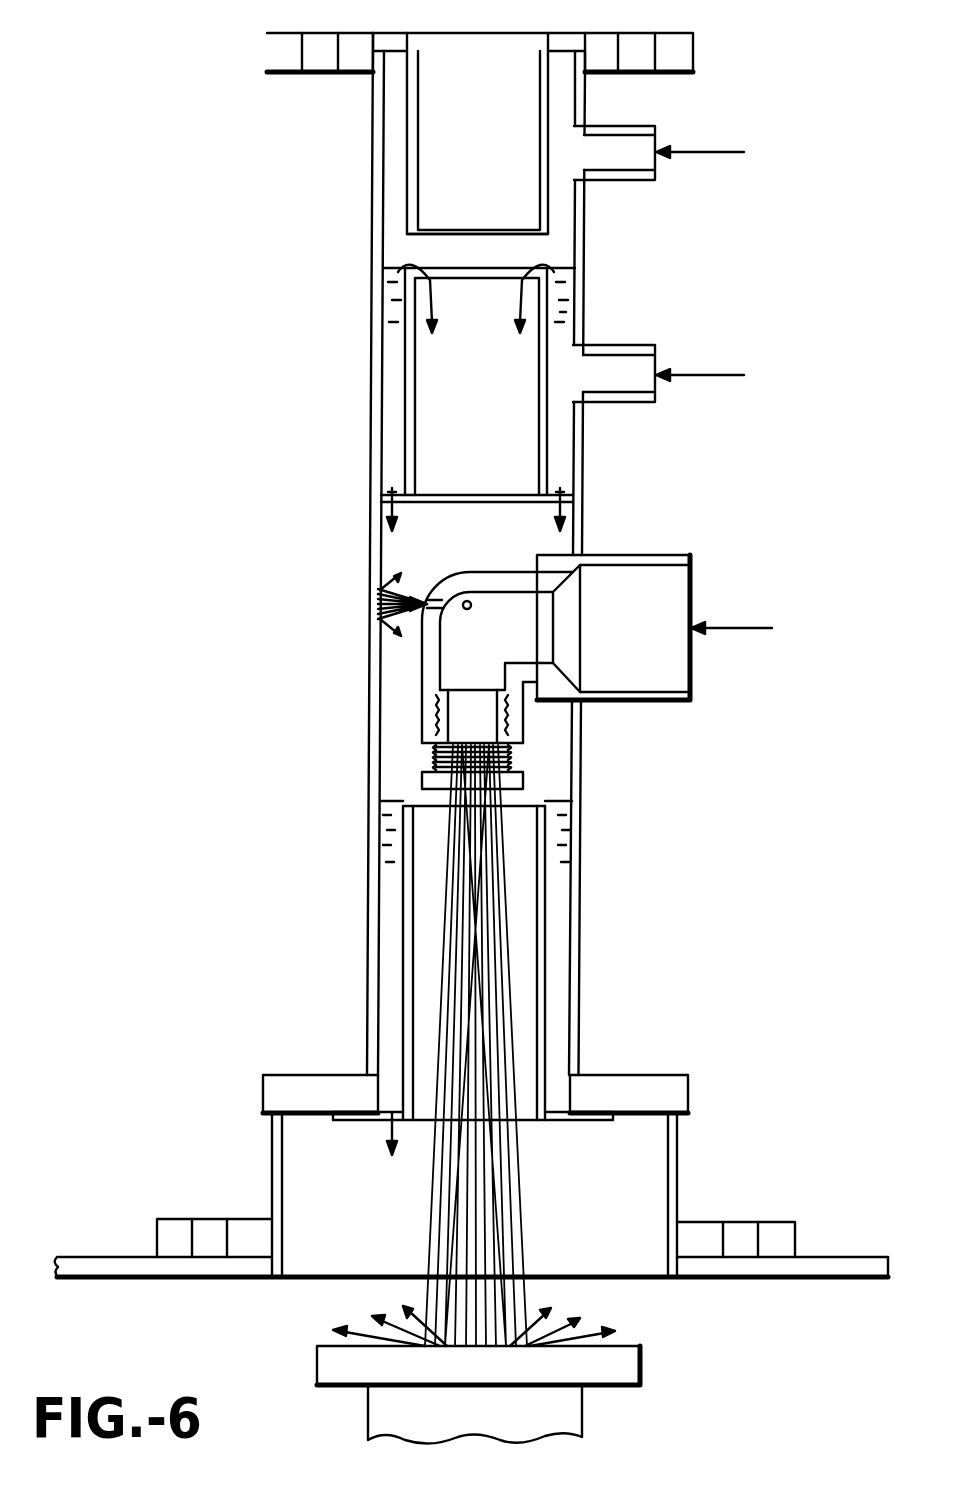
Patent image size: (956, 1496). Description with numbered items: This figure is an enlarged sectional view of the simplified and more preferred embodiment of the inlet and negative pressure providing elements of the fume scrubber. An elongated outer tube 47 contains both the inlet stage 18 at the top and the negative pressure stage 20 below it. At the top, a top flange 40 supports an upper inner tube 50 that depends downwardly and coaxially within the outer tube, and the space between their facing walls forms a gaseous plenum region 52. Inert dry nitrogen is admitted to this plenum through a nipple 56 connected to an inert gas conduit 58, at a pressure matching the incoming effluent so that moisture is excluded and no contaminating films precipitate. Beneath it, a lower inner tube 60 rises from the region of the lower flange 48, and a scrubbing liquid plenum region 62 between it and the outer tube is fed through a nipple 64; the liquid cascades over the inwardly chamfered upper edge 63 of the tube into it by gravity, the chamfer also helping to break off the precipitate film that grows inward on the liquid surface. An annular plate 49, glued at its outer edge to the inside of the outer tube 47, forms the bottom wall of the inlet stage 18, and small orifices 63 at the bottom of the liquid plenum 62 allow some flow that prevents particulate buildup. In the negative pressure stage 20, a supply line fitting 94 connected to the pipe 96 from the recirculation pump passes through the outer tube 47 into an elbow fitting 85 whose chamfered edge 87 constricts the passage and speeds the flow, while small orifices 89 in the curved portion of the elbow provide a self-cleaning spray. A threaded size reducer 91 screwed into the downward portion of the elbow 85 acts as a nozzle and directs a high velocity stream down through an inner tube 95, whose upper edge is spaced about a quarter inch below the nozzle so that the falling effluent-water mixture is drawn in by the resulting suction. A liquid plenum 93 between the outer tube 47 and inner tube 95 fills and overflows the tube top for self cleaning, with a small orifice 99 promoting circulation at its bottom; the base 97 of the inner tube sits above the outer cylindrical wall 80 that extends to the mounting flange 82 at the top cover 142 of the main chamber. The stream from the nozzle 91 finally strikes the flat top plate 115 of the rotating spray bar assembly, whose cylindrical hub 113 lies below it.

The inlet stage 18 is at (262, 362).
The negative pressure stage 20 is at (258, 884).
The top flange 40 is at (587, 38).
The elongated outer tube 47 is at (372, 358).
The lower flange 48 is at (640, 1078).
The annular plate 49 is at (408, 497).
The upper inner tube 50 is at (406, 163).
The gaseous plenum region 52 is at (497, 263).
The nipple 56 is at (622, 126).
The inert gas conduit 58 is at (700, 152).
The lower inner tube 60 is at (548, 342).
The scrubbing liquid plenum region 62 is at (562, 300).
The inwardly chamfered upper edge / small orifices 63 is at (391, 493).
The nipple 64 is at (640, 345).
The outer cylindrical wall 80 is at (678, 1176).
The mounting flange 82 is at (778, 1238).
The elbow fitting 85 is at (507, 575).
The chamfered edge 87 is at (575, 588).
The small orifices 89 is at (467, 600).
The threaded size reducer 91 is at (492, 739).
The liquid plenum 93 is at (385, 935).
The supply line fitting 94 is at (640, 553).
The inner tube 95 is at (546, 950).
The pipe 96 is at (735, 628).
The tube base ring 97 is at (560, 1122).
The small orifice 99 is at (386, 1122).
The cylindrical hub 113 is at (560, 1420).
The top plate 115 is at (618, 1354).
The top cover 142 is at (822, 1270).